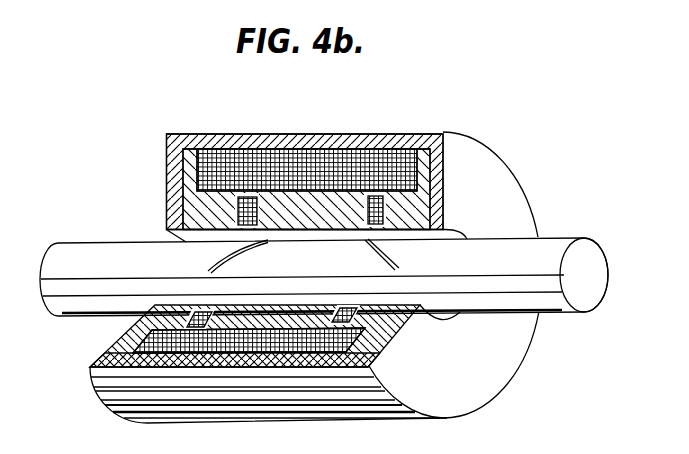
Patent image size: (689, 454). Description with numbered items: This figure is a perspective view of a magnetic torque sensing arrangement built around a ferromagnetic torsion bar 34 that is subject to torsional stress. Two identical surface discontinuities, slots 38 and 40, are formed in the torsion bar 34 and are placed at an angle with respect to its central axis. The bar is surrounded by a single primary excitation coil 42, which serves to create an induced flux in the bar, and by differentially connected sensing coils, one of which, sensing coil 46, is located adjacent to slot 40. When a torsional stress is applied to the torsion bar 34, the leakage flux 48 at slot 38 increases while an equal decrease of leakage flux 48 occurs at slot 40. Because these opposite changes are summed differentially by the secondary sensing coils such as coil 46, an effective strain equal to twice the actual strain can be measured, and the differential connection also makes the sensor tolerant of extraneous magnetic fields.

The ferromagnetic torsion bar 34 is at (552, 247).
The slot 38 is at (236, 263).
The slot 40 is at (401, 260).
The primary excitation coil 42 is at (373, 152).
The sensing coil 46 is at (378, 208).
The leakage flux 48 is at (167, 199).